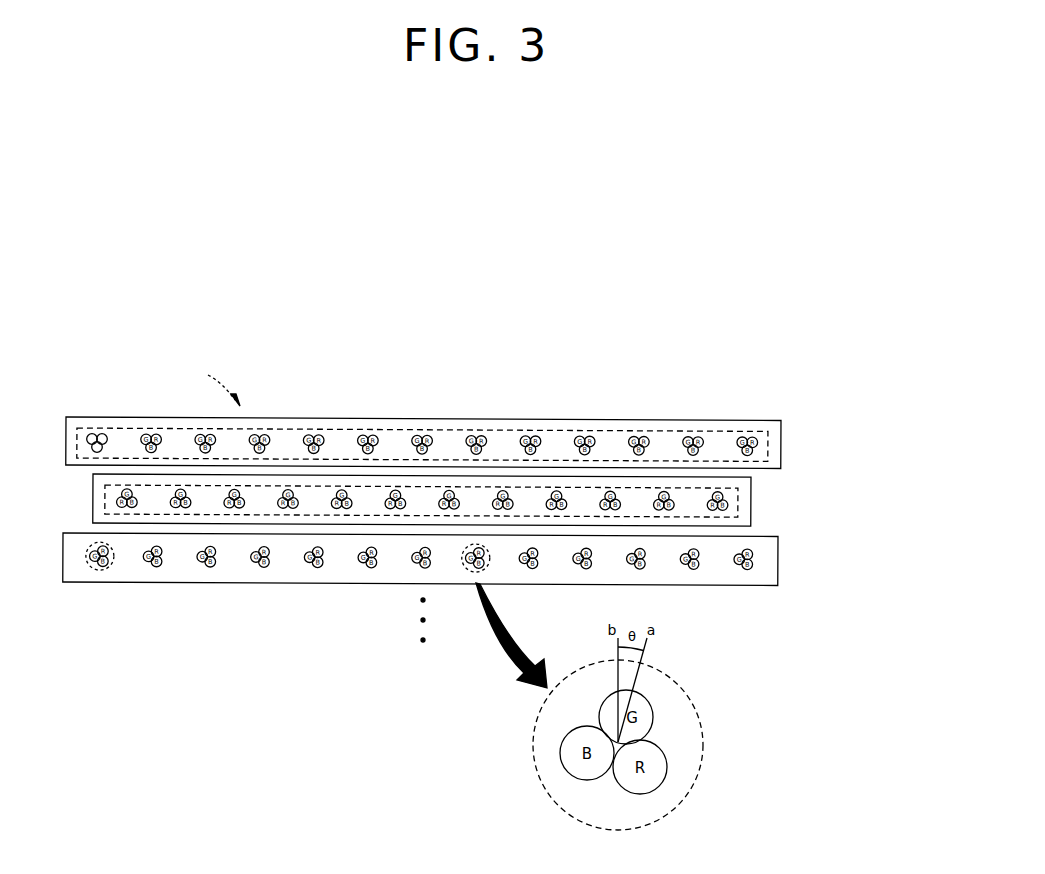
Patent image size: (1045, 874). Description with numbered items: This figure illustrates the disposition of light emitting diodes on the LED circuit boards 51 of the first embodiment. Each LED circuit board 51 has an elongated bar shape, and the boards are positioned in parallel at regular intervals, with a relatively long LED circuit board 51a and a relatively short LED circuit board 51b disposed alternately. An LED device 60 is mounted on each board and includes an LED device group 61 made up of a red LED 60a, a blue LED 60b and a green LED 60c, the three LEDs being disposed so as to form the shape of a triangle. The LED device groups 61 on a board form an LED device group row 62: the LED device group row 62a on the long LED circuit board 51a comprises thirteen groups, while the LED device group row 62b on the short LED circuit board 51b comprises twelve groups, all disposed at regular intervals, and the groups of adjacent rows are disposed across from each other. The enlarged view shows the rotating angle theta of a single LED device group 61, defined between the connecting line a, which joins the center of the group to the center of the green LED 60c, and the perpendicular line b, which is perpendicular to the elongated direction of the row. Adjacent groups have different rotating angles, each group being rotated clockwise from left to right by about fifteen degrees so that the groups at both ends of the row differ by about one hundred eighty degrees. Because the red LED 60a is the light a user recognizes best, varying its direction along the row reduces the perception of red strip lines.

The LED circuit board 51 is at (467, 471).
The long LED circuit board 51a is at (781, 444).
The short LED circuit board 51b is at (751, 504).
The LED device 60 is at (106, 399).
The red LED 60a is at (100, 434).
The blue LED 60b is at (123, 413).
The green LED 60c is at (89, 435).
The LED device group 61 is at (101, 571).
The LED device group row 62 is at (422, 429).
The LED device group row 62a is at (663, 430).
The LED device group row 62b is at (720, 490).